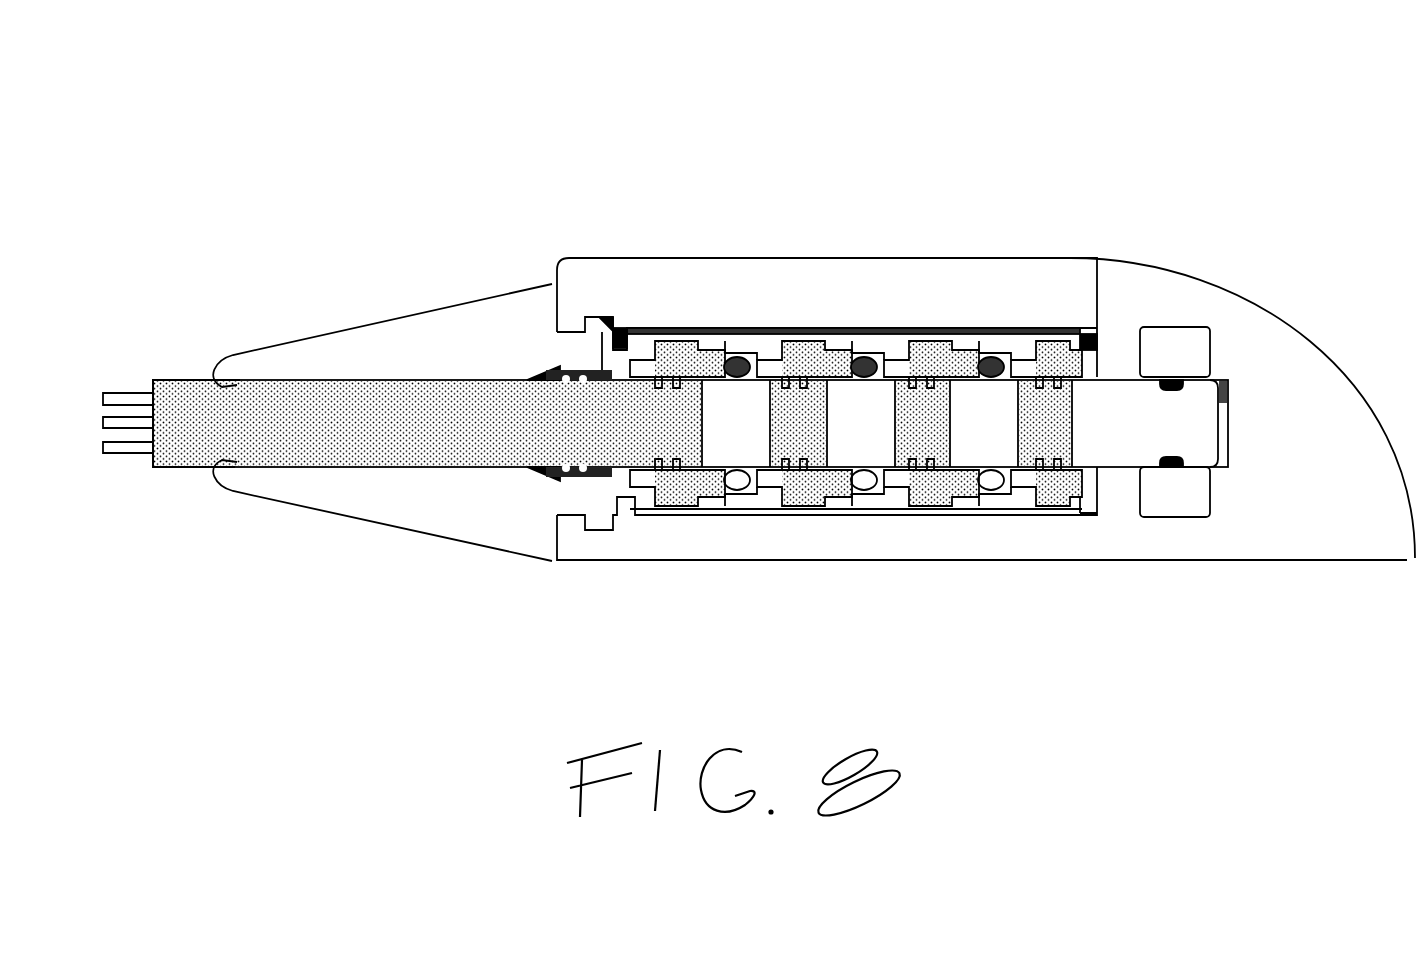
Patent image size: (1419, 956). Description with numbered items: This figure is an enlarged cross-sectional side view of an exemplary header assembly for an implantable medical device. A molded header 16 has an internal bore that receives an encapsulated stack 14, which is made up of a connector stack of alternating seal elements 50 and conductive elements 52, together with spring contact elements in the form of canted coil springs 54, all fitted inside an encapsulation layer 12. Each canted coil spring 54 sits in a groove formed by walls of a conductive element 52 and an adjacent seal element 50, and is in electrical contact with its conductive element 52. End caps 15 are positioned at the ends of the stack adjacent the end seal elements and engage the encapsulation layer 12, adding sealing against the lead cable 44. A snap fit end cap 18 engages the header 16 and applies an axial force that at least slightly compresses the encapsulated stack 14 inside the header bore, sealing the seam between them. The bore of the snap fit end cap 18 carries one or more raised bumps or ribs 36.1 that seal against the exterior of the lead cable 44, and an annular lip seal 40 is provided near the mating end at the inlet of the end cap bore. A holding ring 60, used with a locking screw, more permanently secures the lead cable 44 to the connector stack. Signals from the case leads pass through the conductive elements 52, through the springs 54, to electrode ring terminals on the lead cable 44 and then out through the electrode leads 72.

The encapsulation layer 12 is at (1005, 512).
The encapsulated stack 14 is at (990, 322).
The end caps 15 is at (625, 350).
The molded header 16 is at (1270, 390).
The snap fit end cap 18 is at (331, 335).
The raised bumps or ribs 36.1 is at (565, 467).
The annular lip seal 40 is at (228, 464).
The lead cable 44 is at (197, 395).
The seal elements 50 is at (680, 358).
The conductive elements 52 is at (755, 350).
The canted coil spring 54 is at (877, 358).
The holding ring 60 is at (1180, 360).
The electrode leads 72 is at (123, 395).